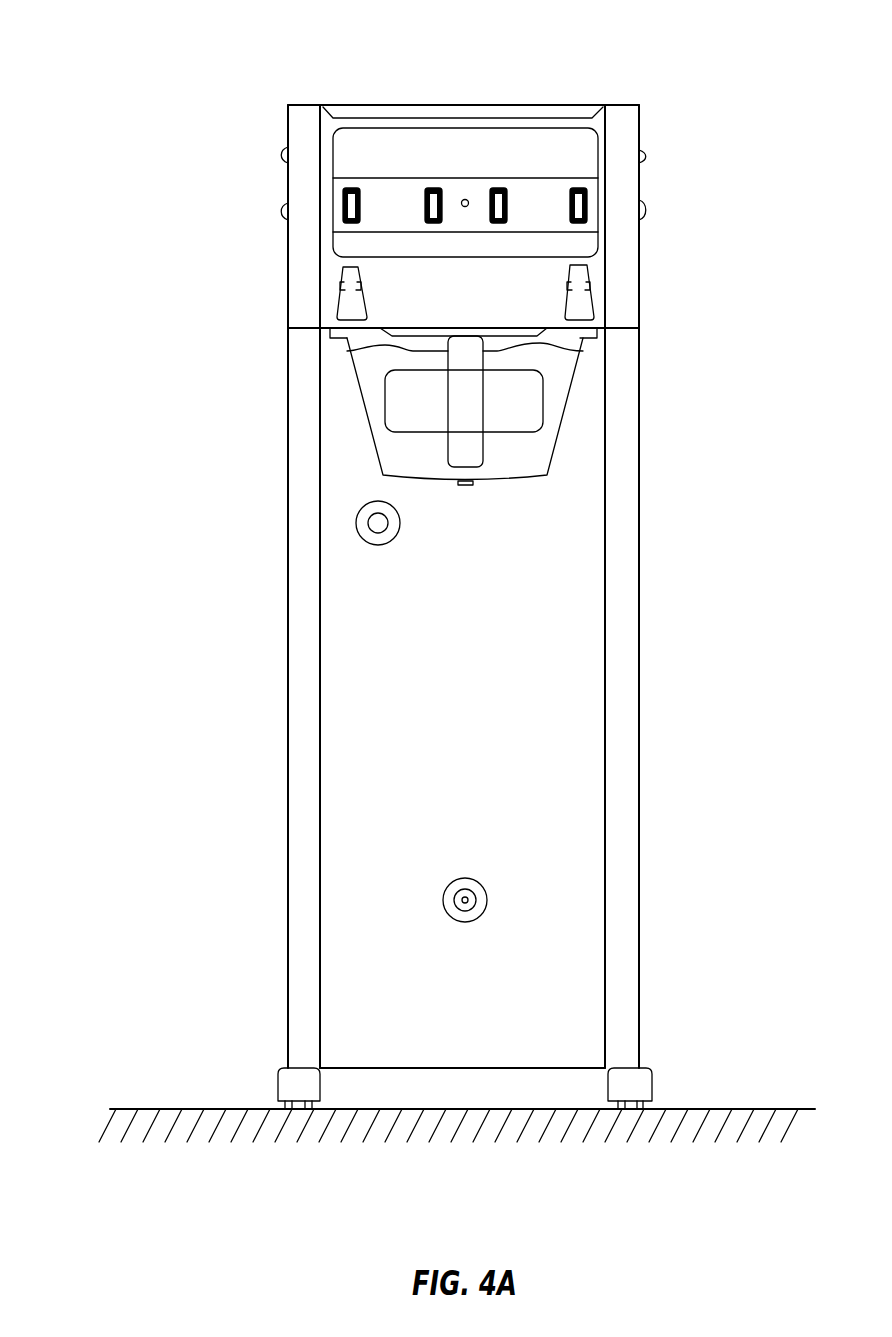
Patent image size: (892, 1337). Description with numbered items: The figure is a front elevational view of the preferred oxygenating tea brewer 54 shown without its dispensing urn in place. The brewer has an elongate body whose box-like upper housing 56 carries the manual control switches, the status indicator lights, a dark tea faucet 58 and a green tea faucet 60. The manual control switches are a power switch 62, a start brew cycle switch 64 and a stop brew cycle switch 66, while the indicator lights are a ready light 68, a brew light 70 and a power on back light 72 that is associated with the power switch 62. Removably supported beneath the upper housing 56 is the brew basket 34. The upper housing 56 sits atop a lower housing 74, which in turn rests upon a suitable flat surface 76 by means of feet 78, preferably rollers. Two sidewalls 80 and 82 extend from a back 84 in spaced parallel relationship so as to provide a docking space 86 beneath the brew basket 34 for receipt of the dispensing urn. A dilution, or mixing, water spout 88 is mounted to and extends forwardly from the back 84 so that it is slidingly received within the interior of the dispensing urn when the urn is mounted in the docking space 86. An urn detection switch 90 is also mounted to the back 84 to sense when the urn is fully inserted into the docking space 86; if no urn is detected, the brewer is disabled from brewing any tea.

The oxygenating tea brewer 54 is at (599, 45).
The upper housing 56 is at (410, 290).
The dark tea faucet 58 is at (348, 315).
The green tea faucet 60 is at (577, 313).
The power switch 62 is at (585, 201).
The start brew cycle switch 64 is at (436, 187).
The stop brew cycle switch 66 is at (507, 202).
The ready light 68 is at (343, 208).
The brew light 70 is at (469, 201).
The power on back light 72 is at (587, 217).
The brew basket 34 is at (576, 412).
The lower housing 74 is at (645, 666).
The flat surface 76 is at (698, 1109).
The feet 78 is at (282, 1105).
The sidewall 80 is at (625, 757).
The sidewall 82 is at (310, 713).
The back 84 is at (570, 608).
The docking space 86 is at (520, 740).
The mixing water spout 88 is at (357, 522).
The urn detection switch 90 is at (443, 900).